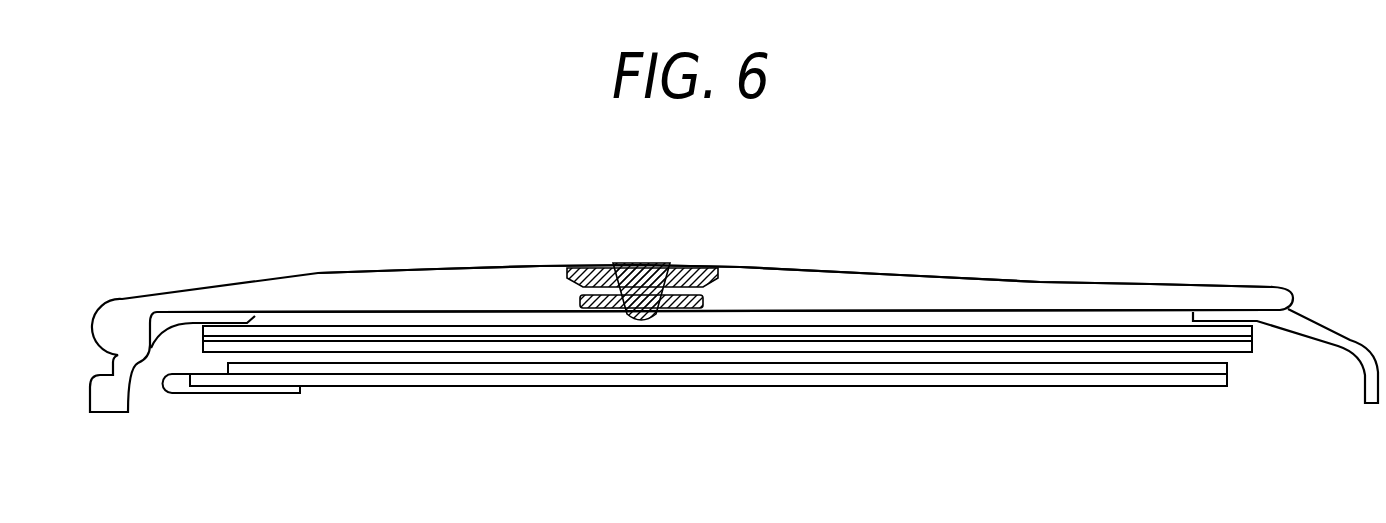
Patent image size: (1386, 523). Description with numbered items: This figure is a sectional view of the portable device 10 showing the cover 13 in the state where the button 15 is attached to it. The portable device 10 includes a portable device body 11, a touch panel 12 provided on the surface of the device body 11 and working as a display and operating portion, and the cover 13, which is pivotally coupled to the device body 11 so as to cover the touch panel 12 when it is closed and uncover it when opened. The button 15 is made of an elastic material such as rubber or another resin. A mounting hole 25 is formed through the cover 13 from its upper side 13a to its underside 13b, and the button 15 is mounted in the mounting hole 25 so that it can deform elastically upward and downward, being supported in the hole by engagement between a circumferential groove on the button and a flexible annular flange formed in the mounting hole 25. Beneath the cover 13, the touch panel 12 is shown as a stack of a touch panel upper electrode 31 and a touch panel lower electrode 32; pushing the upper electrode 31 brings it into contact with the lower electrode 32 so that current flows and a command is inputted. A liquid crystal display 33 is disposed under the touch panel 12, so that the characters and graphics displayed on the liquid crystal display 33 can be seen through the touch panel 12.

The portable device 10 is at (691, 312).
The portable device body 11 is at (1340, 336).
The touch panel 12 is at (1072, 348).
The cover 13 is at (691, 319).
The upper side 13a is at (526, 268).
The underside 13b is at (447, 317).
The button 15 is at (667, 262).
The mounting hole 25 is at (690, 311).
The touch panel upper electrode 31 is at (1122, 328).
The touch panel lower electrode 32 is at (1187, 338).
The liquid crystal display 33 is at (646, 378).